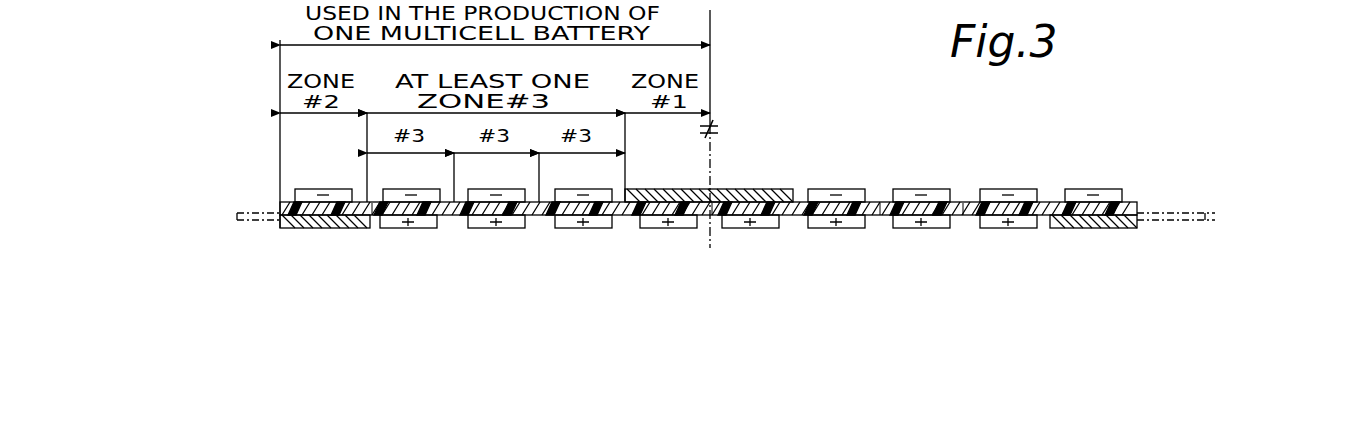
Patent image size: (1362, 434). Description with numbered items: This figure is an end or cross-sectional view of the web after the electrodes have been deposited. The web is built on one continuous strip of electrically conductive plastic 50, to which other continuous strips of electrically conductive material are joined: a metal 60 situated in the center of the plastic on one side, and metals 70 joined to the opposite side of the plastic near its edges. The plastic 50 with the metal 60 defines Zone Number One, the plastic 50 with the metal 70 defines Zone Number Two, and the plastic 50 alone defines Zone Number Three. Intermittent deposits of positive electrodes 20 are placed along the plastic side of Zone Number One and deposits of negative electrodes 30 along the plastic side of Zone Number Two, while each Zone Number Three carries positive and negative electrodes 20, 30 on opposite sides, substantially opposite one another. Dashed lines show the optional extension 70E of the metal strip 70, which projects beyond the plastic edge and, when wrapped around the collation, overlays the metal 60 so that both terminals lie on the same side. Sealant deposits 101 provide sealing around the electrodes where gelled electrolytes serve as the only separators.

The positive electrodes 20 is at (648, 228).
The negative electrodes 30 is at (400, 189).
The electrically conductive plastic 50 is at (280, 205).
The metal 60 is at (742, 189).
The metal 70 is at (327, 222).
The extension of the metal strip 70E is at (237, 217).
The sealant deposits 101 is at (372, 217).